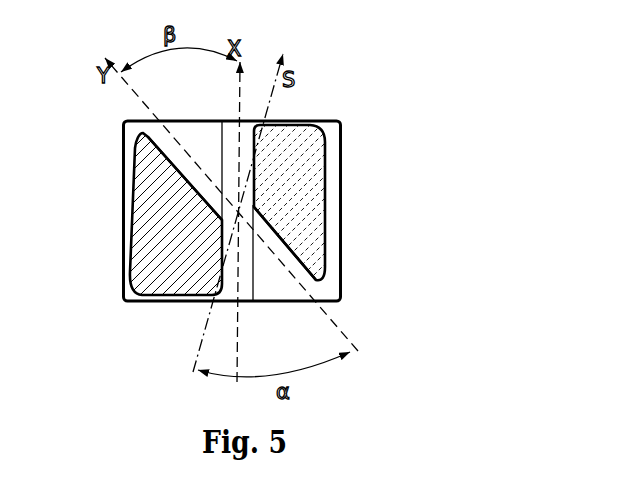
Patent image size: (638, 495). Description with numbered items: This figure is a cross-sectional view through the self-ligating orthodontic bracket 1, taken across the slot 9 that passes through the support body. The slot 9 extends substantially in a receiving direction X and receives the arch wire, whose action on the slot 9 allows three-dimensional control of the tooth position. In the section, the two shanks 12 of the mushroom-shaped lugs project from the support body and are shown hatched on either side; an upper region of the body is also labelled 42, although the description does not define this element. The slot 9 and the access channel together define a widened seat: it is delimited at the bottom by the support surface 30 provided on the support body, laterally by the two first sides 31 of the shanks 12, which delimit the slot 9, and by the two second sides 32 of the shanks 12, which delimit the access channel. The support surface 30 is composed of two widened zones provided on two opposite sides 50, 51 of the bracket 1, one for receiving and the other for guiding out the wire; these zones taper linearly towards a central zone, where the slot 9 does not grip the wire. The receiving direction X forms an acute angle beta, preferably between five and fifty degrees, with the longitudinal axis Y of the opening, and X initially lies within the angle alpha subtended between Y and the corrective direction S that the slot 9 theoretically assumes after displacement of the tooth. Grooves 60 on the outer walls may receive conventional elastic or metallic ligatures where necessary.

The self-ligating orthodontic bracket 1 is at (380, 91).
The slot 9 is at (245, 119).
The shank 12 is at (170, 214).
The support surface 30 is at (214, 148).
The first side 31 is at (243, 160).
The second side 32 is at (143, 133).
The top surface 42 is at (178, 115).
The side of the bracket 50 is at (299, 121).
The side of the bracket 51 is at (168, 305).
The groove 60 is at (124, 233).